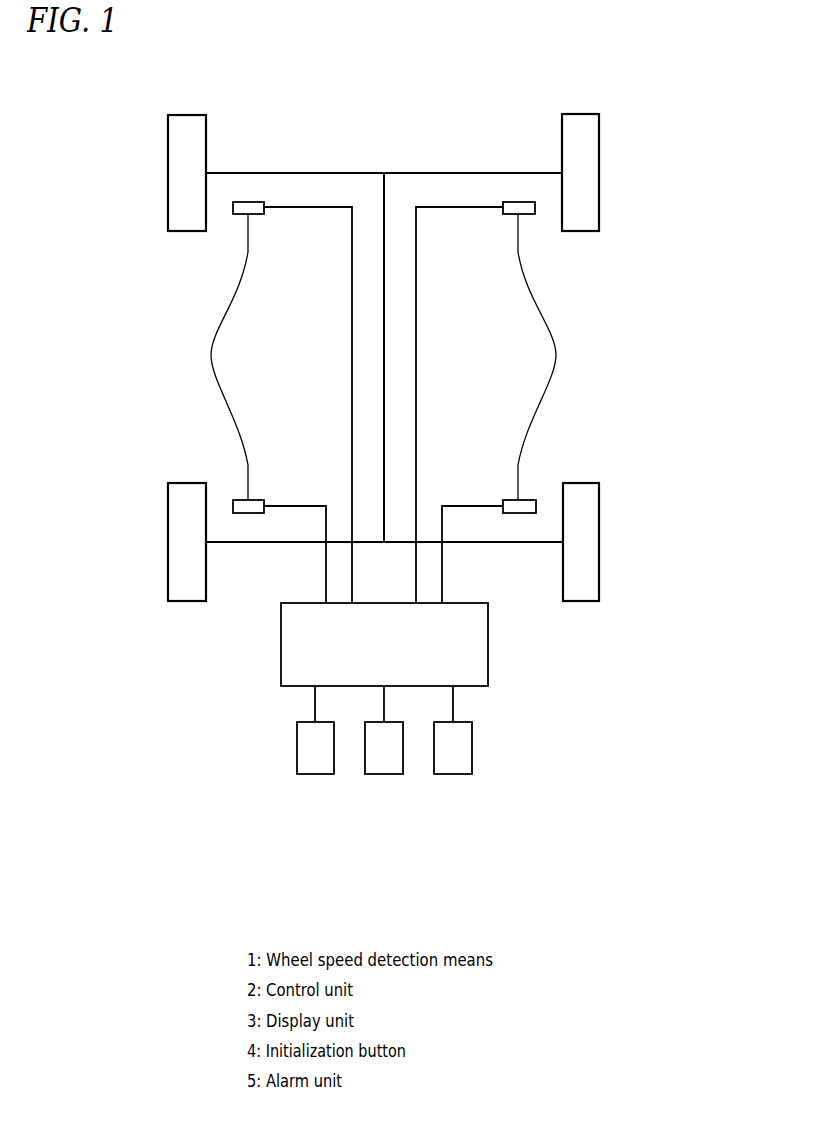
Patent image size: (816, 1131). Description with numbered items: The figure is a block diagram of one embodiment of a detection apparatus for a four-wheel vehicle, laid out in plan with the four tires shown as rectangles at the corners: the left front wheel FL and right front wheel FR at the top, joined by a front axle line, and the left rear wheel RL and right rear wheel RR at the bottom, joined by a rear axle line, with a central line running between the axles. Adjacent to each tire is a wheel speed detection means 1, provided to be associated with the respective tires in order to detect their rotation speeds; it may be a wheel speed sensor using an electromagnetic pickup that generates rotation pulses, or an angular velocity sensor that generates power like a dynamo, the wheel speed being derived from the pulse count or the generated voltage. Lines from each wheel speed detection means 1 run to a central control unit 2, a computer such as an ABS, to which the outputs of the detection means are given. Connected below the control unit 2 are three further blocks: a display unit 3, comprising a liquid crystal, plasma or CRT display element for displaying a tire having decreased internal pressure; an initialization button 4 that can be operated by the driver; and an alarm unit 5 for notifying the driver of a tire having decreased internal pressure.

The wheel speed detection means 1 is at (382, 402).
The control unit 2 is at (488, 648).
The display unit 3 is at (316, 774).
The initialization button 4 is at (385, 774).
The alarm unit 5 is at (453, 774).
The left front wheel FL is at (168, 160).
The right front wheel FR is at (599, 157).
The left rear wheel RL is at (168, 527).
The right rear wheel RR is at (599, 527).